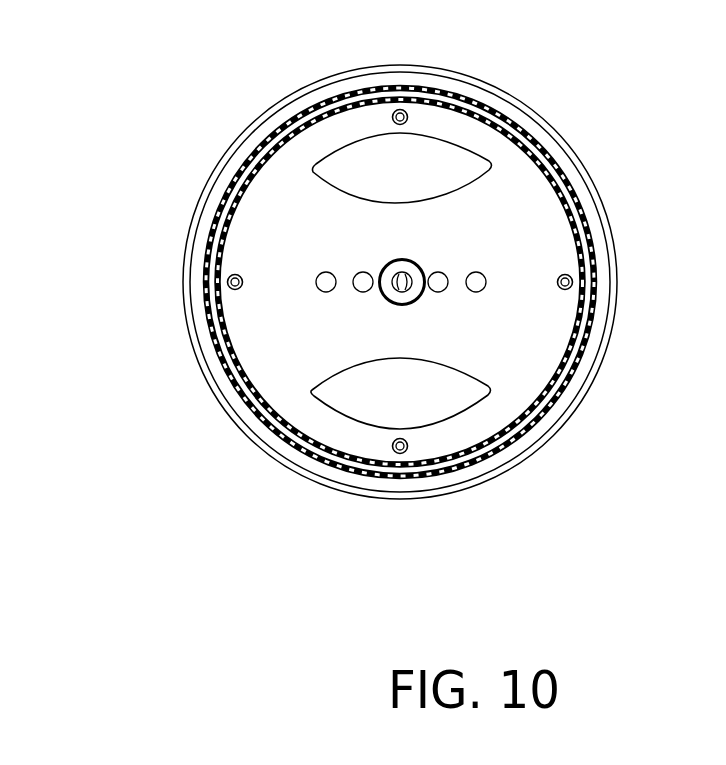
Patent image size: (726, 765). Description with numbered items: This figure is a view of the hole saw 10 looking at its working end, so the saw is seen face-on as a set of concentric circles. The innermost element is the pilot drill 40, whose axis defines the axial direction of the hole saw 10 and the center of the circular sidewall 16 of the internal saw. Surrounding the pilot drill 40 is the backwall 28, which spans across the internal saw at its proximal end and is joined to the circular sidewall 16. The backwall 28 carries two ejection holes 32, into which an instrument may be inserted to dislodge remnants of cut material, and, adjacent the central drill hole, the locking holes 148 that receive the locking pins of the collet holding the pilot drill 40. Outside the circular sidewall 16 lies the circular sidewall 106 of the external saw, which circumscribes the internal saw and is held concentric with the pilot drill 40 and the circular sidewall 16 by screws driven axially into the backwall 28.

The hole saw 10 is at (152, 352).
The circular sidewall 16 is at (439, 277).
The backwall 28 is at (276, 212).
The ejection holes 32 is at (350, 160).
The pilot drill 40 is at (397, 288).
The circular sidewall 106 is at (416, 490).
The locking holes 148 is at (369, 268).